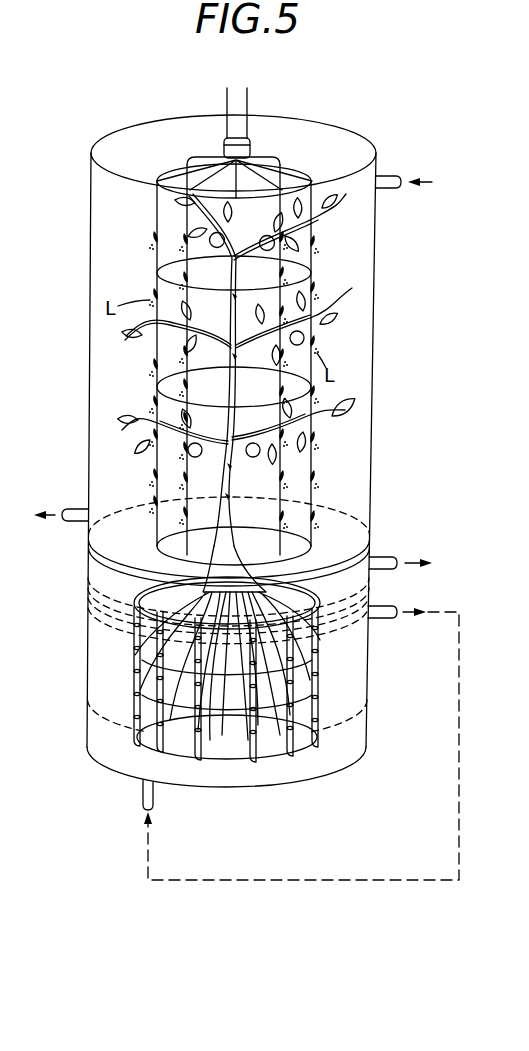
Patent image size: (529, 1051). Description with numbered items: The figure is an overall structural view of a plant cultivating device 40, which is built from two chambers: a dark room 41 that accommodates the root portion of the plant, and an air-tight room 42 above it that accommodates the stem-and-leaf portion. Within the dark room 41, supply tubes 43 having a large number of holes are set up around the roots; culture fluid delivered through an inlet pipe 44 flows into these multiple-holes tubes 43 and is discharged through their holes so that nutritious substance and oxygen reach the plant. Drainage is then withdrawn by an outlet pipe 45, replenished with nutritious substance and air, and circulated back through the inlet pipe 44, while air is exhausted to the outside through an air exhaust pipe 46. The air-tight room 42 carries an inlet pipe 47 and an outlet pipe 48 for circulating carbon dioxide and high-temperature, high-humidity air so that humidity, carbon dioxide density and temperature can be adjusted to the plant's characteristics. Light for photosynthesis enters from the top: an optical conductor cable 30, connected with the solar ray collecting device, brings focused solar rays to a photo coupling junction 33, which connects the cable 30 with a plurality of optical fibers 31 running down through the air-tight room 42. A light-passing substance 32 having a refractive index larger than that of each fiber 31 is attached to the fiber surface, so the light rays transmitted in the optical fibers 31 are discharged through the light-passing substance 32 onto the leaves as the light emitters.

The optical conductor cable 30 is at (250, 100).
The optical fiber 31 is at (157, 215).
The light-passing substance 32 is at (155, 290).
The photo coupling junction 33 is at (250, 152).
The plant cultivating device 40 is at (243, 451).
The dark room 41 is at (105, 635).
The air-tight room 42 is at (100, 332).
The supply tubes 43 is at (142, 692).
The inlet pipe 44 is at (153, 795).
The outlet pipe 45 is at (393, 619).
The air exhaust pipe 46 is at (390, 557).
The inlet pipe 47 is at (393, 177).
The outlet pipe 48 is at (64, 509).